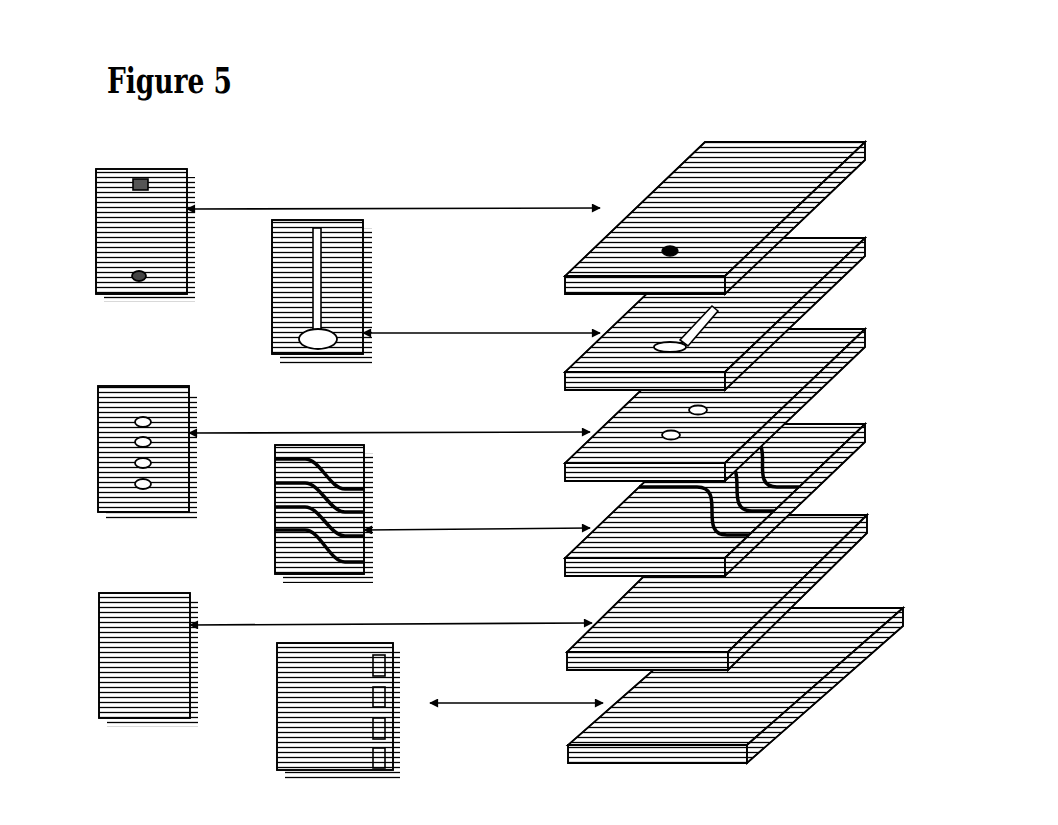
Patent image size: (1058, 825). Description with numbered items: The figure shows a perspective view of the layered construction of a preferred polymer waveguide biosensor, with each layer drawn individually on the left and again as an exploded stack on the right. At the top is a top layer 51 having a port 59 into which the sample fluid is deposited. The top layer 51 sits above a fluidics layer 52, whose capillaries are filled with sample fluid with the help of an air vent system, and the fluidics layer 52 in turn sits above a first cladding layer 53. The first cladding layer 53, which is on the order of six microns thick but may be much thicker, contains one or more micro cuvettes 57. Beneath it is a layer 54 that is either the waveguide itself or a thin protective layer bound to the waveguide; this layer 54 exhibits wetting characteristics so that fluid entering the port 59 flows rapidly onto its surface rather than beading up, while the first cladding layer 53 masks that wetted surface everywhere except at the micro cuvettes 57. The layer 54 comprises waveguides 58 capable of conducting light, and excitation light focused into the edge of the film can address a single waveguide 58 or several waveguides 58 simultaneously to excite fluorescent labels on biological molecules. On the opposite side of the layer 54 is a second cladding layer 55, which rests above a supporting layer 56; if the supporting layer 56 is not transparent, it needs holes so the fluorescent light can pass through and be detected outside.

The top layer 51 is at (438, 226).
The fluidics layer 52 is at (272, 240).
The first cladding layer 53 is at (436, 424).
The layer 54 is at (536, 503).
The second cladding layer 55 is at (99, 627).
The supporting layer 56 is at (277, 657).
The micro cuvettes 57 is at (135, 448).
The waveguides 58 is at (322, 465).
The port 59 is at (128, 275).